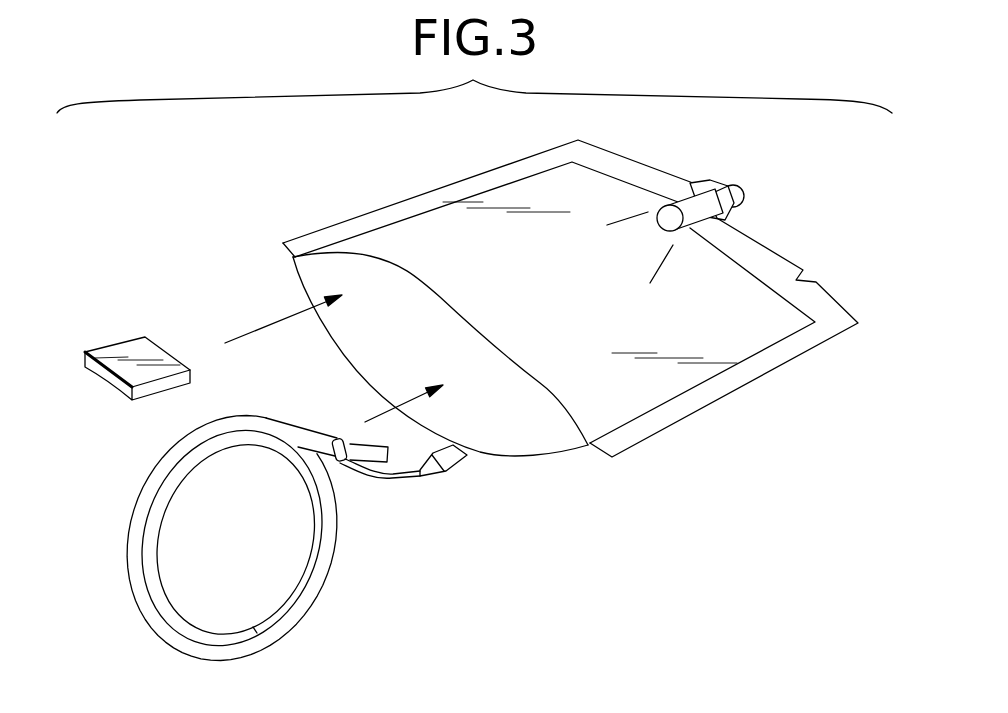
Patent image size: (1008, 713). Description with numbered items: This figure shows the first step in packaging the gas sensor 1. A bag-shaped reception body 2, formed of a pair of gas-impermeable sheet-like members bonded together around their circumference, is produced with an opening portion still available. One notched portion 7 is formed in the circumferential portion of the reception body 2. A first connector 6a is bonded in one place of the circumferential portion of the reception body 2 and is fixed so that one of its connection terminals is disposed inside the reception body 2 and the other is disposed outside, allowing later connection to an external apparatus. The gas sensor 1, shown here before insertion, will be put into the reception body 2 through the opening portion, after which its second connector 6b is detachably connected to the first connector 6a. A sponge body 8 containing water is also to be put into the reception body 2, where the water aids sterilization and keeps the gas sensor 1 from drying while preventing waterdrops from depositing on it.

The gas sensor 1 is at (333, 582).
The reception body 2 is at (640, 445).
The first connector 6a is at (712, 182).
The second connector 6b is at (457, 473).
The notched portion 7 is at (815, 270).
The sponge body 8 is at (122, 342).